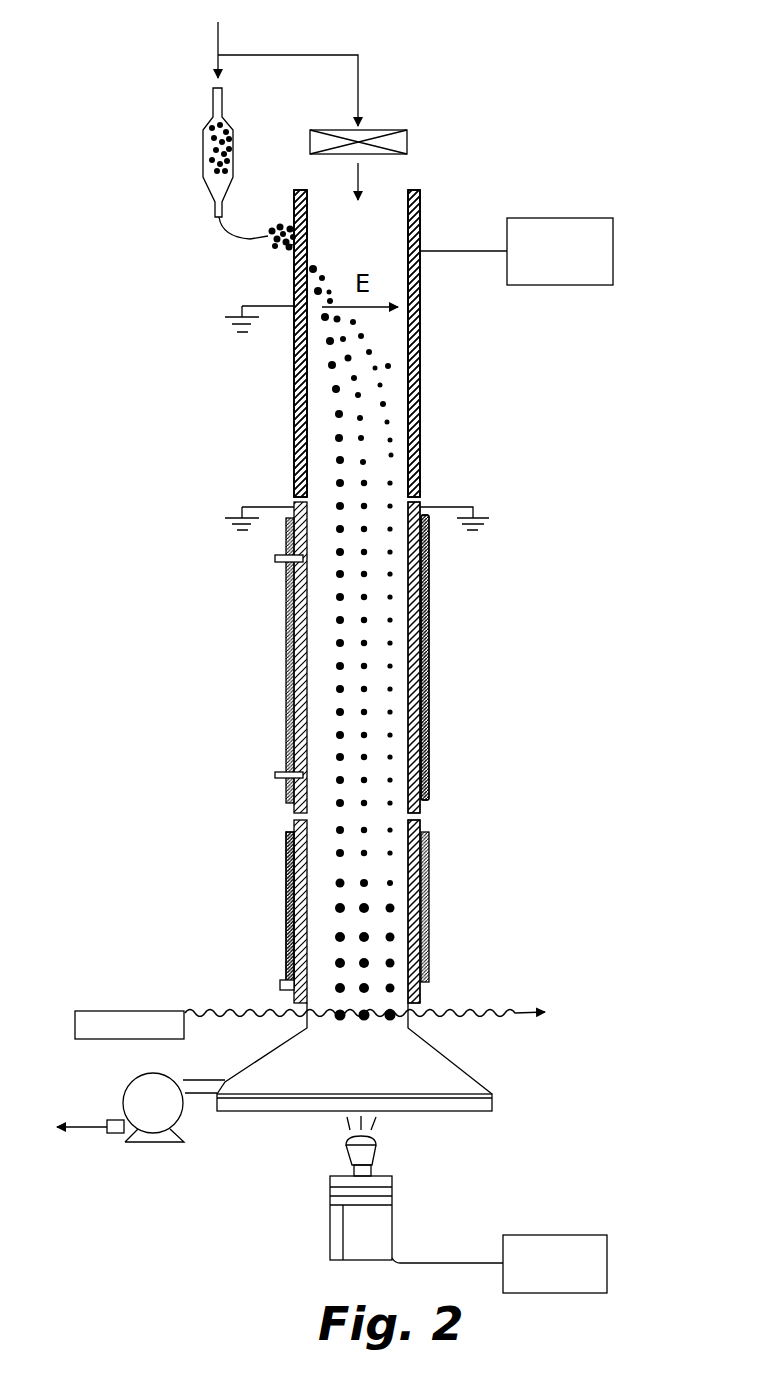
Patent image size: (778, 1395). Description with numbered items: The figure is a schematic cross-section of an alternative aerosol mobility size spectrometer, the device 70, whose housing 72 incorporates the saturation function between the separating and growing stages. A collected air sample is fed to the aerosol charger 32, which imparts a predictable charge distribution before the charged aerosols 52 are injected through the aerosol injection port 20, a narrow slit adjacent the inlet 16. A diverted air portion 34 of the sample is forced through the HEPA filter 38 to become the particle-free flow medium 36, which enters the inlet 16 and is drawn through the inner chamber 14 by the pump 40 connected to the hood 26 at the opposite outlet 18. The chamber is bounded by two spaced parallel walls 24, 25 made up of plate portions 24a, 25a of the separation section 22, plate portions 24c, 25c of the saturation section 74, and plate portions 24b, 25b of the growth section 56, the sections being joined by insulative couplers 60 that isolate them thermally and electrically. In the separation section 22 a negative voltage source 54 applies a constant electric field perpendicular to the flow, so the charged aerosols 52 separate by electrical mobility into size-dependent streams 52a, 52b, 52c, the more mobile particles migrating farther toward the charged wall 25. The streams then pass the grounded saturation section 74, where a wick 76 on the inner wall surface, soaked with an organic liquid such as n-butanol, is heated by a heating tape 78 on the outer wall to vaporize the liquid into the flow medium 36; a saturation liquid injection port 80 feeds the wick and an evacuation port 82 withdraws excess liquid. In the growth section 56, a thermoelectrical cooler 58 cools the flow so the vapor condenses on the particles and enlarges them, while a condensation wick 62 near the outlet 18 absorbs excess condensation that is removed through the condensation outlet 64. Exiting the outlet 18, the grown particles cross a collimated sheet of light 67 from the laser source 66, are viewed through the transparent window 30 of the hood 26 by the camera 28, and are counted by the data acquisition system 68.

The alternative device 70 is at (110, 71).
The diverted air portion 34 is at (318, 55).
The aerosol charger 32 is at (203, 152).
The HEPA filter 38 is at (396, 130).
The flow medium 36 is at (358, 179).
The inlet 16 is at (413, 186).
The plate portion 25a is at (420, 232).
The inner chamber 14 is at (392, 292).
The parallel wall 25 is at (420, 416).
The separation section 22 is at (294, 284).
The parallel wall 24 is at (294, 428).
The plate portion 24a is at (294, 460).
The housing 72 is at (294, 407).
The aerosol injection port 20 is at (294, 245).
The charged aerosols 52 is at (250, 238).
The aerosol flow stream 52a is at (332, 365).
The aerosol flow stream 52b is at (354, 378).
The aerosol flow stream 52c is at (380, 385).
The negative voltage source 54 is at (613, 262).
The insulative coupler 60 is at (420, 497).
The wick 76 is at (428, 518).
The heating tape 78 is at (429, 640).
The plate portion 25c is at (420, 808).
The saturation section 74 is at (286, 648).
The saturation liquid injection port 80 is at (275, 558).
The saturation liquid evacuation port 82 is at (275, 775).
The plate portion 24c is at (294, 810).
The condensation wick 62 is at (286, 832).
The growth section 56 is at (286, 892).
The condensation outlet 64 is at (280, 986).
The plate portion 24b is at (294, 1000).
The thermoelectrical cooler 58 is at (429, 888).
The plate portion 25b is at (421, 985).
The outlet 18 is at (420, 1005).
The hood 26 is at (455, 1063).
The transparent window 30 is at (445, 1111).
The camera 28 is at (330, 1220).
The data acquisition system 68 is at (590, 1235).
The laser source 66 is at (90, 1011).
The collimated sheet of light 67 is at (515, 1022).
The pump 40 is at (130, 1145).